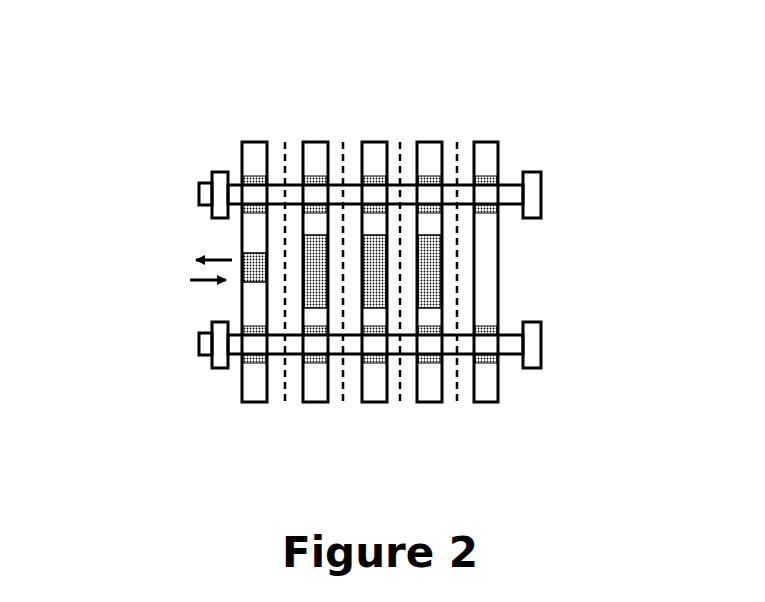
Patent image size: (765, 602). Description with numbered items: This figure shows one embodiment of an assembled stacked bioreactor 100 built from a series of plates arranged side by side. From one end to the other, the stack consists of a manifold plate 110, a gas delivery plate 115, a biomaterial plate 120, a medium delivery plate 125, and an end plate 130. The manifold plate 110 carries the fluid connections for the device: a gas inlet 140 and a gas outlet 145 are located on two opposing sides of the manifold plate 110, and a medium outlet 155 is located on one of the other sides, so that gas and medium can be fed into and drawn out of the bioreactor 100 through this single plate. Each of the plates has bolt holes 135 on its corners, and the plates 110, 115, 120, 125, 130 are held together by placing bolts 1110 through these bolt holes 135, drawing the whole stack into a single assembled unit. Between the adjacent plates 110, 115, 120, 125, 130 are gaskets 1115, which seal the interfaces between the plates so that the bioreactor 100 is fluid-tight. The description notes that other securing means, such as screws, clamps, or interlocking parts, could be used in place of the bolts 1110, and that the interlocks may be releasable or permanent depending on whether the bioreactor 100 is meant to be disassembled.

The bioreactor 100 is at (175, 100).
The manifold plate 110 is at (253, 140).
The gas delivery plate 115 is at (315, 142).
The biomaterial plate 120 is at (375, 142).
The medium delivery plate 125 is at (433, 141).
The end plate 130 is at (490, 141).
The bolt holes 135 is at (500, 181).
The gas inlet 140 is at (243, 364).
The gas outlet 145 is at (243, 214).
The medium outlet 155 is at (243, 284).
The bolts 1110 is at (542, 195).
The gaskets 1115 is at (455, 402).